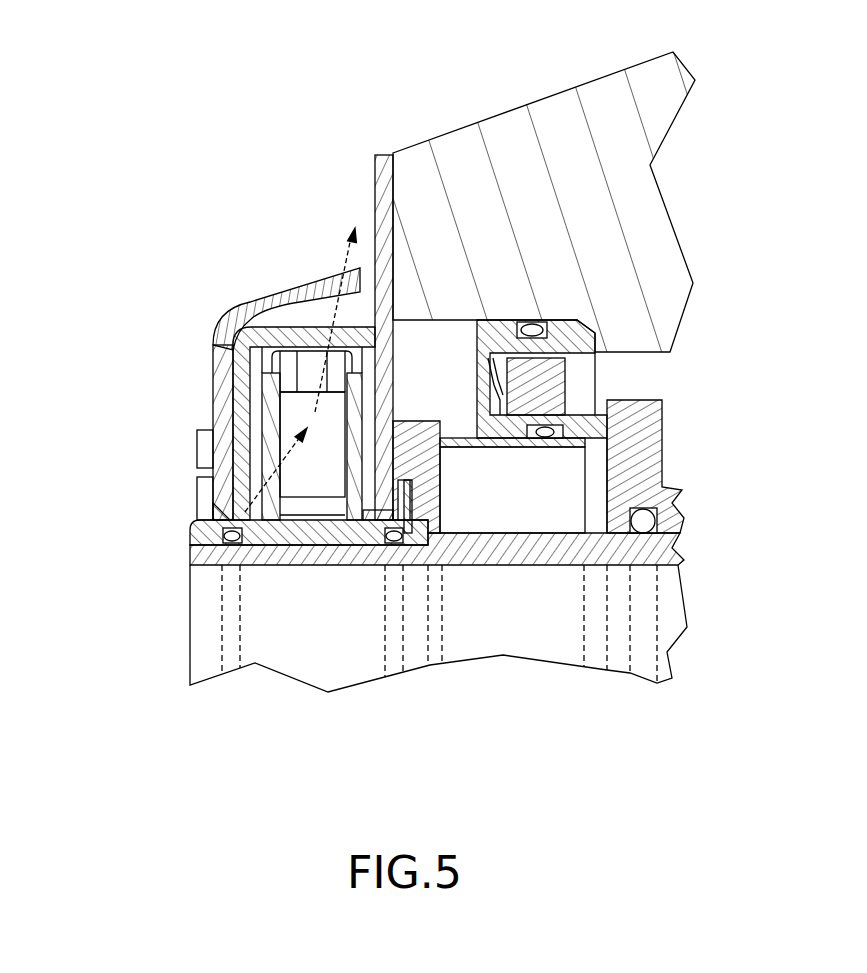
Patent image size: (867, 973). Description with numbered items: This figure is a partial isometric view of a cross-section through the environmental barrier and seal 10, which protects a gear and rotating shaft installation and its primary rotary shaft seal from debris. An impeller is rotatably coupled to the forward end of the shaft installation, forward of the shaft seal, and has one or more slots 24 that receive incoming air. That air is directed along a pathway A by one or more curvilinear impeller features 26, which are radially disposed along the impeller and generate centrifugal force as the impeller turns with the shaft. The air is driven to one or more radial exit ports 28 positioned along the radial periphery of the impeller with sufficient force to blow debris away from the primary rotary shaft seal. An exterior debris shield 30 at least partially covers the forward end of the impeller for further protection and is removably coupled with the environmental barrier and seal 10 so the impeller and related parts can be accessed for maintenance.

The environmental barrier and seal 10 is at (144, 692).
The slots 24 is at (192, 518).
The curvilinear impeller features 26 is at (330, 428).
The radial exit ports 28 is at (307, 350).
The exterior debris shield 30 is at (270, 299).
The pathway A is at (217, 512).